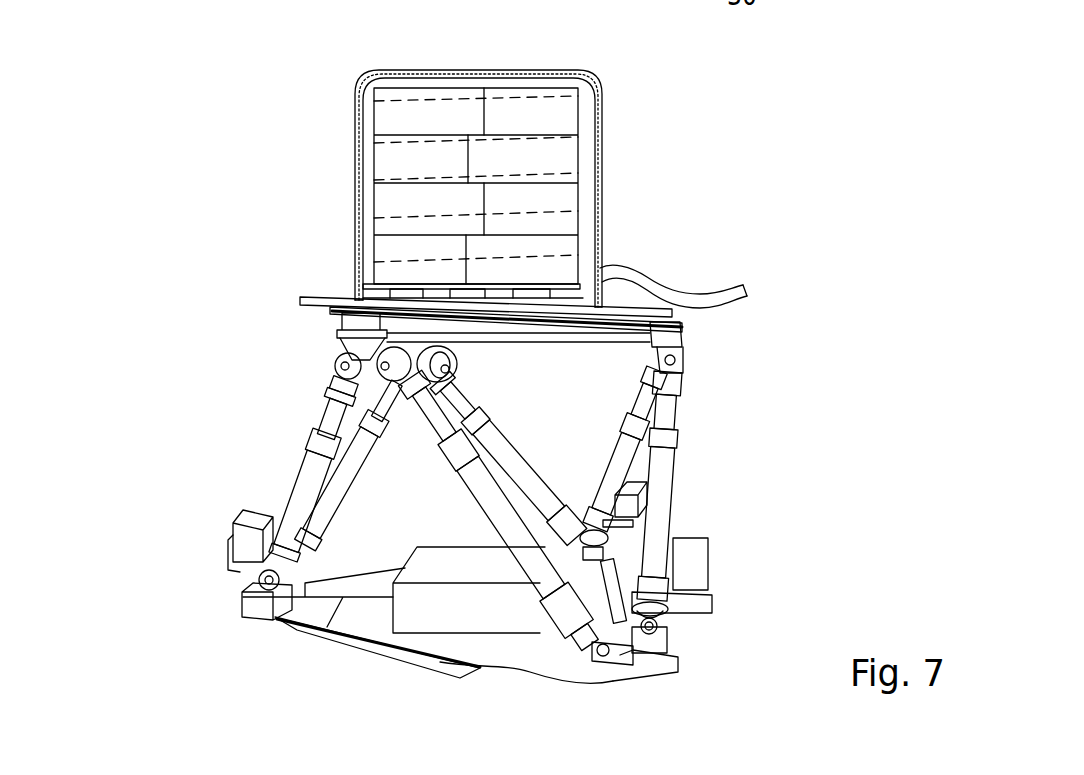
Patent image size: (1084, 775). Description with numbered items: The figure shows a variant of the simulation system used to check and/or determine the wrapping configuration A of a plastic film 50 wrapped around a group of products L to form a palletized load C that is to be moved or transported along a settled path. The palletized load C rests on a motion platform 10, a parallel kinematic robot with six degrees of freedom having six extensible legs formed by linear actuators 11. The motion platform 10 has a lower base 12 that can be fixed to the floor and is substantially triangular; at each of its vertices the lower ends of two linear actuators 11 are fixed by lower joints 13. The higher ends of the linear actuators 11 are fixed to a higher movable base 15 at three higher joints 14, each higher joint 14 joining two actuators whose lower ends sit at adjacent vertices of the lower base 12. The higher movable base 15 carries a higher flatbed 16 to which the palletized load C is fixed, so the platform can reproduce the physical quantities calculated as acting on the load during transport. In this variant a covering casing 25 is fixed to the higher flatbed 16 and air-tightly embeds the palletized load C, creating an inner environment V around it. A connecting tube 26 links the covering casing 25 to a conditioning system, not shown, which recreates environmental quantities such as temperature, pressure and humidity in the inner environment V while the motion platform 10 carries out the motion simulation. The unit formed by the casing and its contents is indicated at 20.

The wrapping configuration A is at (786, 142).
The motion platform 10 is at (708, 396).
The linear actuators 11 is at (307, 478).
The lower base 12 is at (300, 618).
The lower joints 13 is at (267, 608).
The higher joints 14 is at (352, 341).
The higher movable base 15 is at (673, 333).
The higher flatbed 16 is at (307, 297).
The cargo unit 20 is at (298, 220).
The covering casing 25 is at (600, 177).
The connecting tube 26 is at (660, 283).
The plastic film 50 is at (510, 97).
The group of products L is at (412, 112).
The inner environment V is at (367, 129).
The palletized load C is at (547, 112).